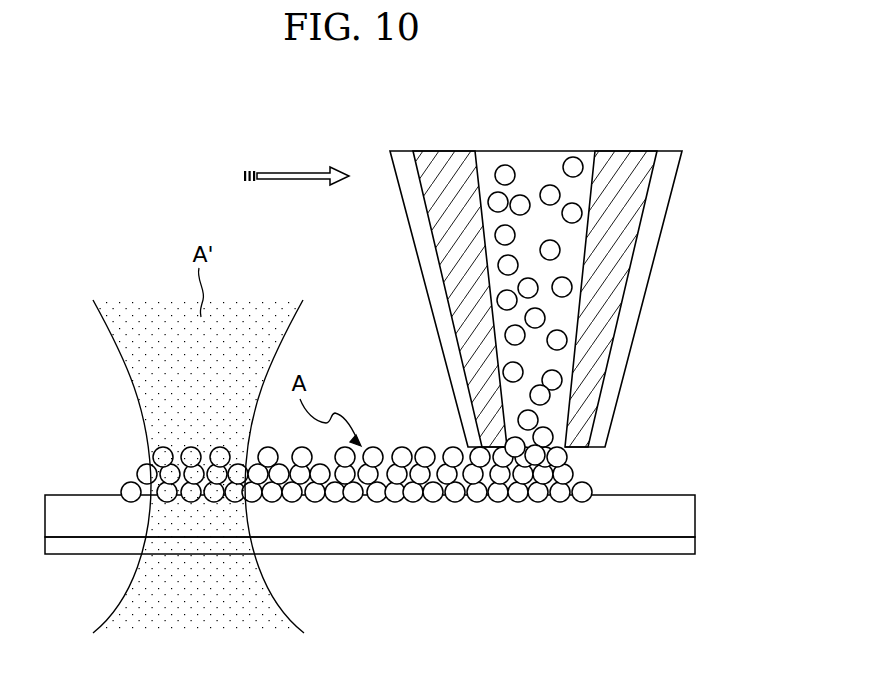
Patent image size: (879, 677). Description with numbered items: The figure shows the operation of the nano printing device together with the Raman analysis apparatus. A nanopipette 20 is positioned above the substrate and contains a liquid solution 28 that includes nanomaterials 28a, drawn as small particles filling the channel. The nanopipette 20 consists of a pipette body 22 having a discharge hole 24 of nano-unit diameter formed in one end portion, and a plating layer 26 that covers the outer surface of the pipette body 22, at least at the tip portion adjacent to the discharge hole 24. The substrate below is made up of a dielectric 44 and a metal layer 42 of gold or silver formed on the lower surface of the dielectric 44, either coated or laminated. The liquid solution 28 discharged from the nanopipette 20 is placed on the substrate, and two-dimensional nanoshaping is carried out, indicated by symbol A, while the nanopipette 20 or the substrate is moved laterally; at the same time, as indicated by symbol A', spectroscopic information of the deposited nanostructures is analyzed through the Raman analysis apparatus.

The nanopipette 20 is at (571, 277).
The pipette body 22 is at (622, 227).
The discharge hole 24 is at (540, 445).
The plating layer 26 is at (640, 287).
The liquid solution 28 is at (462, 277).
The nanomaterials 28a is at (505, 175).
The metal layer 42 is at (694, 542).
The dielectric 44 is at (694, 507).